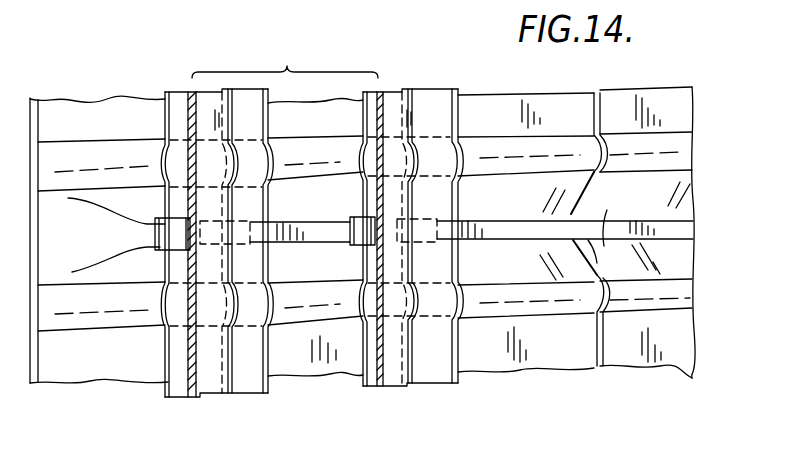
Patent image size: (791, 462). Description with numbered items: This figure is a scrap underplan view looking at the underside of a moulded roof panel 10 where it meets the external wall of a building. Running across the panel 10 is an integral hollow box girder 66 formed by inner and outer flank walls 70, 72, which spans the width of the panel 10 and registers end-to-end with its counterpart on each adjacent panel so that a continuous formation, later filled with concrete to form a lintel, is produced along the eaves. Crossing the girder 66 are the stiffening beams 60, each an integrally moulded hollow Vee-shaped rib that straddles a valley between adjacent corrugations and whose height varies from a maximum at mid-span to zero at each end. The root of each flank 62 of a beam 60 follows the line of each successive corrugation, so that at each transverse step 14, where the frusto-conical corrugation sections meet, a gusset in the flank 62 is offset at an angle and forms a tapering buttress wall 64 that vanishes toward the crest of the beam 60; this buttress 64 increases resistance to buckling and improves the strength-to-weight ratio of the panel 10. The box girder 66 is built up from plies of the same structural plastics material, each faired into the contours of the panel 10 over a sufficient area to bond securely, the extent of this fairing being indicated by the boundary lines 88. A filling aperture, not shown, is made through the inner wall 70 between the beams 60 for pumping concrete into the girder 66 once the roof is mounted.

The panel 10 is at (663, 94).
The transverse step 14 is at (592, 114).
The stiffening beam 60 is at (697, 236).
The flank 62 is at (689, 153).
The buttress wall 64 is at (588, 182).
The box girder 66 is at (285, 56).
The inner flank wall 70 is at (384, 197).
The outer flank wall 72 is at (194, 198).
The boundary line 88 is at (165, 104).